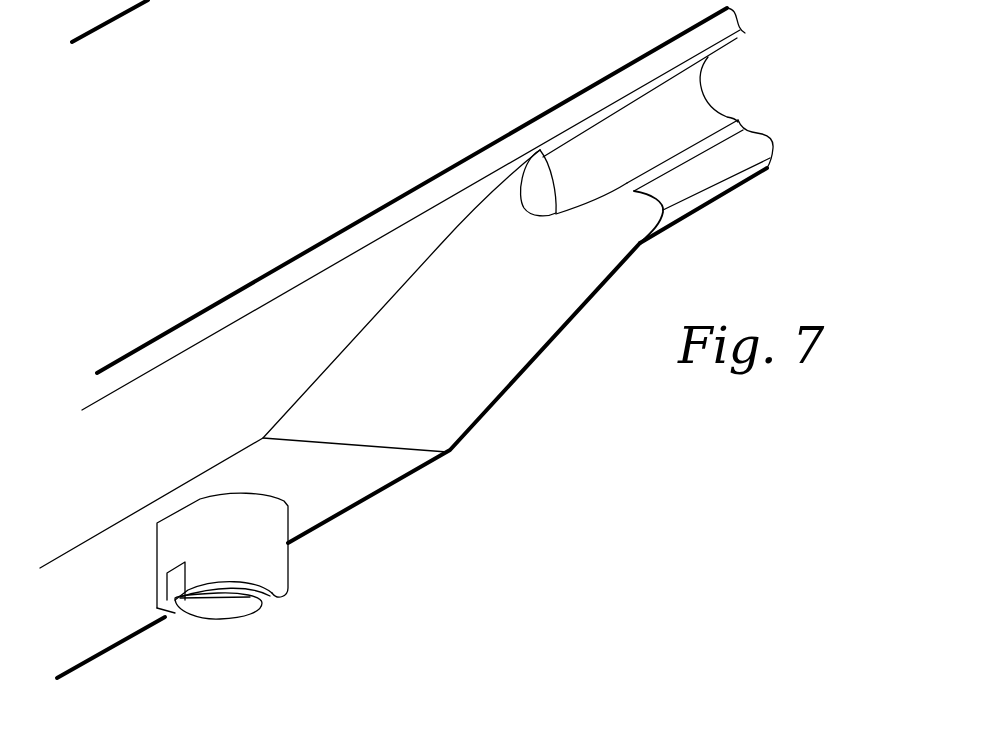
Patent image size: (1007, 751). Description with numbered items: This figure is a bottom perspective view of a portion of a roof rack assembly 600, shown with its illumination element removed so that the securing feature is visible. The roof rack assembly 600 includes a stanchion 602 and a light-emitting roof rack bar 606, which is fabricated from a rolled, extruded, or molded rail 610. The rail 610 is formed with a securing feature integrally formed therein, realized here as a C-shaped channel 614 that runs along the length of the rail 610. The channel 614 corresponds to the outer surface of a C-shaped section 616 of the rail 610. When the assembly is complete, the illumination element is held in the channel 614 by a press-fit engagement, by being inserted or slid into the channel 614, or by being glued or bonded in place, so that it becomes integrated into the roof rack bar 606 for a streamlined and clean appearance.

The roof rack assembly 600 is at (318, 199).
The stanchion 602 is at (365, 478).
The light-emitting roof rack bar 606 is at (565, 96).
The rail 610 is at (748, 171).
The C-shaped channel 614 is at (620, 150).
The C-shaped section 616 is at (643, 115).